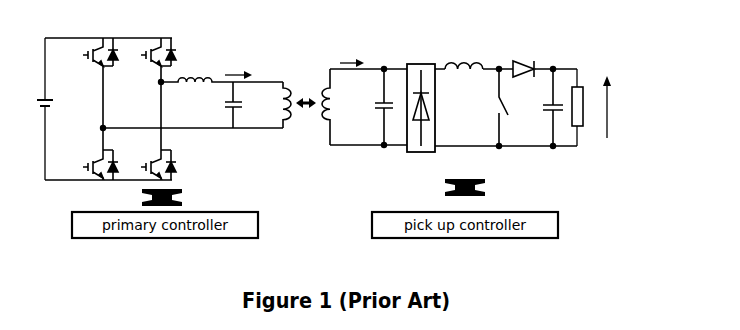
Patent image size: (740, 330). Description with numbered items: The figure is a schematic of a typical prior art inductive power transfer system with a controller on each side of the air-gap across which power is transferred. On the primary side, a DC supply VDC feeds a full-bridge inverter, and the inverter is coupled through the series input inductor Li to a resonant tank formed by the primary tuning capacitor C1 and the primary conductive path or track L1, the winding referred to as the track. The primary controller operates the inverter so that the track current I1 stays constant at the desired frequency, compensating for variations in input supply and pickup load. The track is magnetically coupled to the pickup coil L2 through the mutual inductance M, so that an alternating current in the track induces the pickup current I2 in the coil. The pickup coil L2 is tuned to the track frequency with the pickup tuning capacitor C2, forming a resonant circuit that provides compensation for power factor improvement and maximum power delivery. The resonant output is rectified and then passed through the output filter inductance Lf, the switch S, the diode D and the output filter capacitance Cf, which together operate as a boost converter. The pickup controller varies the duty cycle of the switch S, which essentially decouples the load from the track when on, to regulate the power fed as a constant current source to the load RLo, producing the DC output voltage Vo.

The input voltage VDC is at (56, 105).
The series inductor Li is at (222, 70).
The track current I1 is at (238, 68).
The tuning capacitor C1 is at (225, 105).
The track L1 is at (278, 105).
The mutual inductance M is at (306, 93).
The element track is at (291, 126).
The pickup coil L2 is at (333, 107).
The pickup coil current I2 is at (352, 55).
The tuning capacitor C2 is at (375, 107).
The output filter inductance Lf is at (464, 74).
The switch S is at (495, 107).
The diode D is at (523, 60).
The output filter capacitance Cf is at (545, 107).
The load RLo is at (587, 106).
The output voltage Vo is at (613, 107).